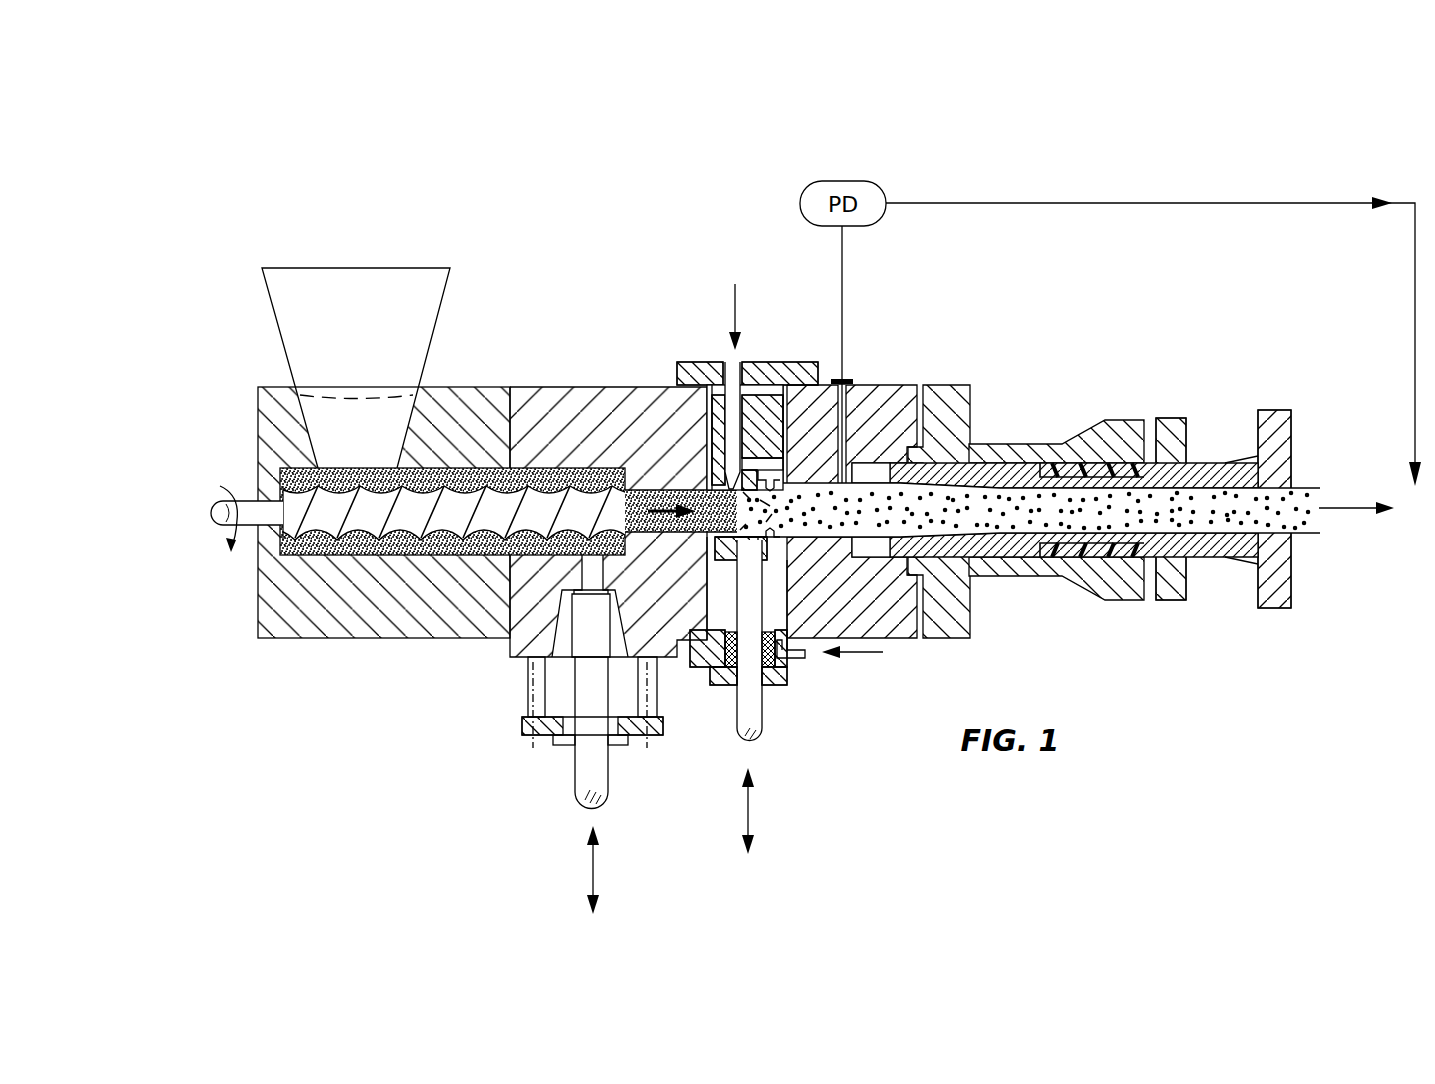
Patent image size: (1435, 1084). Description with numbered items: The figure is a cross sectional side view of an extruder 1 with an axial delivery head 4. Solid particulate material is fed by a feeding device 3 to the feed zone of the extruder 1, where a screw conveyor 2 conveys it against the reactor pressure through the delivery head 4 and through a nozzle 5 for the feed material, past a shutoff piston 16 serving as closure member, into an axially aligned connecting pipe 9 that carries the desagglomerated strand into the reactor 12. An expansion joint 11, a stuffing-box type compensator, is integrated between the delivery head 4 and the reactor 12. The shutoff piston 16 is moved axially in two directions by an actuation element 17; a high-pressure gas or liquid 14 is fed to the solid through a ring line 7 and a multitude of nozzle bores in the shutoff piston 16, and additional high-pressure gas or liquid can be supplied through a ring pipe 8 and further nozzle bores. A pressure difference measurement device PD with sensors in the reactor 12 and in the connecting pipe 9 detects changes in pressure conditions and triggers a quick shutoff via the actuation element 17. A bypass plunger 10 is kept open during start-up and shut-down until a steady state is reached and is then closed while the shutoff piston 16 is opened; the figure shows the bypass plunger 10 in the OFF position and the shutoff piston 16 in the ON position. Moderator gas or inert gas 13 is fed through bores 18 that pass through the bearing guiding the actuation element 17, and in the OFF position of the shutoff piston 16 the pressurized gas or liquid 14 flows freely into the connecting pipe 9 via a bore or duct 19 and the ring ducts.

The extruder 1 is at (440, 410).
The screw conveyor 2 is at (505, 505).
The feeding device 3 is at (422, 312).
The delivery head 4 is at (575, 400).
The nozzle 5 is at (645, 490).
The ring line 7 is at (742, 540).
The ring pipe 8 is at (785, 580).
The connecting pipe 9 is at (865, 502).
The bypass plunger 10 is at (590, 745).
The expansion joint 11 is at (1119, 469).
The reactor 12 is at (1376, 509).
The moderator gas or inert gas 13 is at (872, 660).
The high-pressure gas or liquid 14 is at (734, 301).
The shutoff piston 16 is at (740, 400).
The actuation element 17 is at (753, 690).
The bores 18 is at (790, 655).
The bore or duct 19 is at (762, 460).